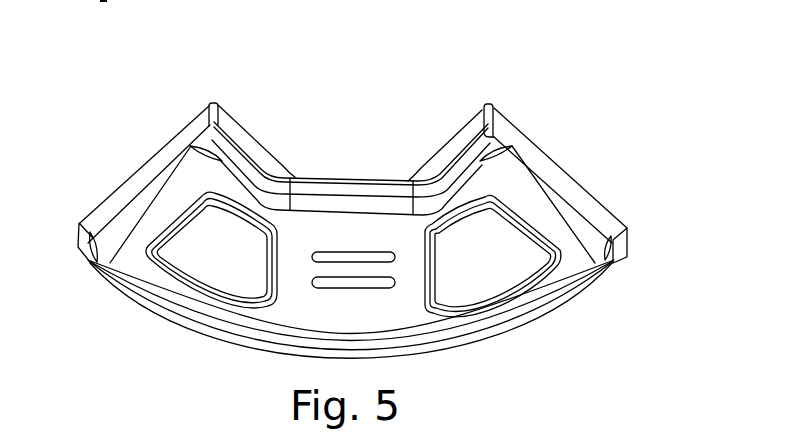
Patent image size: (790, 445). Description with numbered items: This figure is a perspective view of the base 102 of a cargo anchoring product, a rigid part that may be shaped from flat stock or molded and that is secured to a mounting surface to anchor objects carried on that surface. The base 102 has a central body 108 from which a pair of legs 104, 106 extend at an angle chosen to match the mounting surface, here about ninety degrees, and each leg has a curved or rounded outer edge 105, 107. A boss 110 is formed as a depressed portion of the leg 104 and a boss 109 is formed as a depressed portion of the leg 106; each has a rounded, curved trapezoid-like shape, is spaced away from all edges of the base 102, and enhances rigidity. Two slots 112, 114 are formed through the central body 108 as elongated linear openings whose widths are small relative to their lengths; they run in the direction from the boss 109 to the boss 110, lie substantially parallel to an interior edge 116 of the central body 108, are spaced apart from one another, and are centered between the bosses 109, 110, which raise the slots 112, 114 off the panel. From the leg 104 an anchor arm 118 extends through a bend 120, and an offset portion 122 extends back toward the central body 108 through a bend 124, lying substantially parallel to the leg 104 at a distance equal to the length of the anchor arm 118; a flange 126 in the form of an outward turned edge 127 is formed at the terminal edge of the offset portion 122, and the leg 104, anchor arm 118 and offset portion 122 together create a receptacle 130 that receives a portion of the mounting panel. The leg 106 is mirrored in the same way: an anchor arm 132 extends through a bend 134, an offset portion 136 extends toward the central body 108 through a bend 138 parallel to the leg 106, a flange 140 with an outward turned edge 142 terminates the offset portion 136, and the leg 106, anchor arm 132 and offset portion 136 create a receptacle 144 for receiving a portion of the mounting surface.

The base 102 is at (367, 190).
The leg 104 is at (528, 158).
The outer edge 105 is at (172, 323).
The leg 106 is at (130, 258).
The outer edge 107 is at (527, 330).
The central body 108 is at (405, 312).
The boss 109 is at (203, 261).
The boss 110 is at (499, 263).
The slot 112 is at (328, 262).
The slot 114 is at (330, 283).
The interior edge 116 is at (358, 177).
The anchor arm 118 is at (505, 122).
The bend 120 is at (580, 218).
The offset portion 122 is at (478, 128).
The bend 124 is at (490, 104).
The flange 126 is at (425, 176).
The outward turned edge 127 is at (432, 172).
The receptacle 130 is at (451, 147).
The anchor arm 132 is at (165, 150).
The bend 134 is at (207, 128).
The offset portion 136 is at (256, 140).
The bend 138 is at (214, 102).
The flange 140 is at (277, 160).
The outward turned edge 142 is at (272, 174).
The receptacle 144 is at (234, 129).